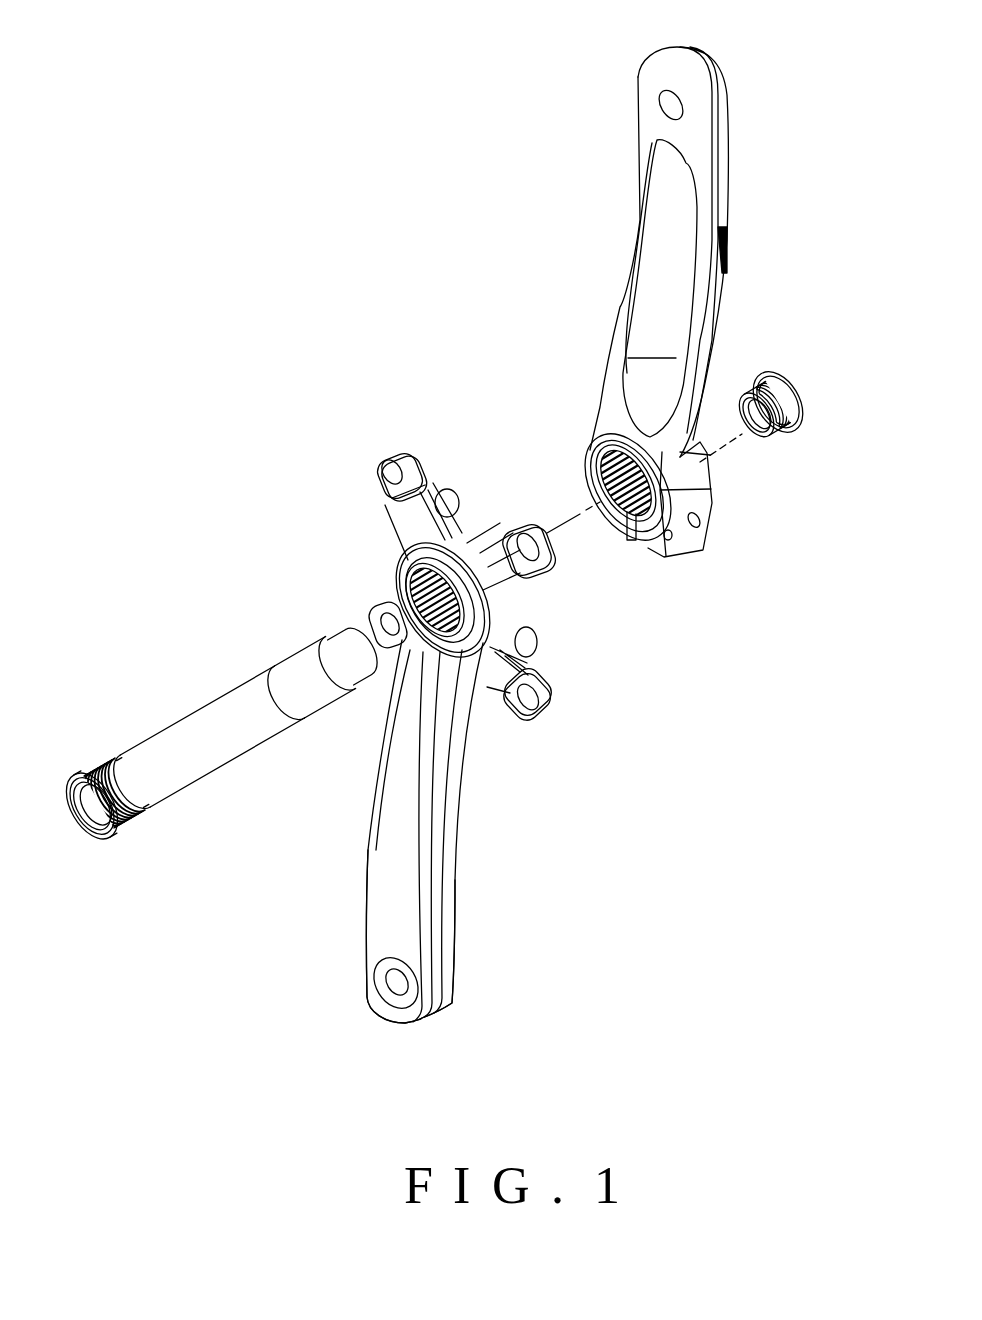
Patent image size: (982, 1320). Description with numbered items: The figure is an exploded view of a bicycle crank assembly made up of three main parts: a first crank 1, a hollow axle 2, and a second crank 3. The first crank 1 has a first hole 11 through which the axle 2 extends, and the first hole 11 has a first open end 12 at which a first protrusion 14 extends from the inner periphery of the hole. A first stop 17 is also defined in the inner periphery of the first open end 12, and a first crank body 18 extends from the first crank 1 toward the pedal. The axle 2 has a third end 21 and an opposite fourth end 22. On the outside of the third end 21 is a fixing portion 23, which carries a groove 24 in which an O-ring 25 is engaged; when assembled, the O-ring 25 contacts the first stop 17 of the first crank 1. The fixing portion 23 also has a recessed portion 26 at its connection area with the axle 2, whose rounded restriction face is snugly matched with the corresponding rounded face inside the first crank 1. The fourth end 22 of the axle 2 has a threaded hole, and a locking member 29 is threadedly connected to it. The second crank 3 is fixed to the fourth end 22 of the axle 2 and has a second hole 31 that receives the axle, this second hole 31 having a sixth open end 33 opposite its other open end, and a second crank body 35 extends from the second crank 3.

The first crank 1 is at (478, 723).
The axle 2 is at (205, 717).
The second crank 3 is at (681, 498).
The first hole 11 is at (452, 575).
The first open end 12 is at (429, 580).
The first protrusion 14 is at (410, 581).
The first stop 17 is at (400, 668).
The first crank body 18 is at (390, 888).
The third end 21 is at (92, 837).
The fourth end 22 is at (345, 632).
The fixing portion 23 is at (132, 827).
The groove 24 is at (113, 828).
The O-ring 25 is at (82, 773).
The recessed portion 26 is at (123, 760).
The locking member 29 is at (782, 379).
The second hole 31 is at (631, 540).
The sixth open end 33 is at (600, 474).
The second crank body 35 is at (642, 229).